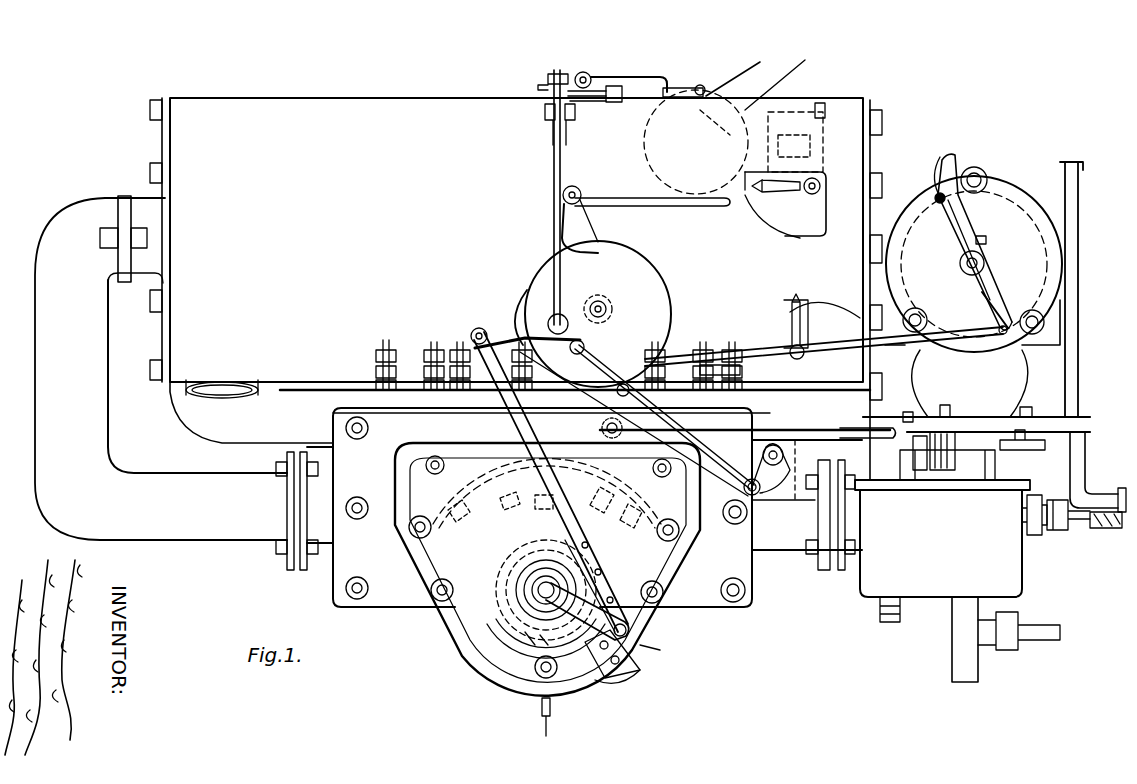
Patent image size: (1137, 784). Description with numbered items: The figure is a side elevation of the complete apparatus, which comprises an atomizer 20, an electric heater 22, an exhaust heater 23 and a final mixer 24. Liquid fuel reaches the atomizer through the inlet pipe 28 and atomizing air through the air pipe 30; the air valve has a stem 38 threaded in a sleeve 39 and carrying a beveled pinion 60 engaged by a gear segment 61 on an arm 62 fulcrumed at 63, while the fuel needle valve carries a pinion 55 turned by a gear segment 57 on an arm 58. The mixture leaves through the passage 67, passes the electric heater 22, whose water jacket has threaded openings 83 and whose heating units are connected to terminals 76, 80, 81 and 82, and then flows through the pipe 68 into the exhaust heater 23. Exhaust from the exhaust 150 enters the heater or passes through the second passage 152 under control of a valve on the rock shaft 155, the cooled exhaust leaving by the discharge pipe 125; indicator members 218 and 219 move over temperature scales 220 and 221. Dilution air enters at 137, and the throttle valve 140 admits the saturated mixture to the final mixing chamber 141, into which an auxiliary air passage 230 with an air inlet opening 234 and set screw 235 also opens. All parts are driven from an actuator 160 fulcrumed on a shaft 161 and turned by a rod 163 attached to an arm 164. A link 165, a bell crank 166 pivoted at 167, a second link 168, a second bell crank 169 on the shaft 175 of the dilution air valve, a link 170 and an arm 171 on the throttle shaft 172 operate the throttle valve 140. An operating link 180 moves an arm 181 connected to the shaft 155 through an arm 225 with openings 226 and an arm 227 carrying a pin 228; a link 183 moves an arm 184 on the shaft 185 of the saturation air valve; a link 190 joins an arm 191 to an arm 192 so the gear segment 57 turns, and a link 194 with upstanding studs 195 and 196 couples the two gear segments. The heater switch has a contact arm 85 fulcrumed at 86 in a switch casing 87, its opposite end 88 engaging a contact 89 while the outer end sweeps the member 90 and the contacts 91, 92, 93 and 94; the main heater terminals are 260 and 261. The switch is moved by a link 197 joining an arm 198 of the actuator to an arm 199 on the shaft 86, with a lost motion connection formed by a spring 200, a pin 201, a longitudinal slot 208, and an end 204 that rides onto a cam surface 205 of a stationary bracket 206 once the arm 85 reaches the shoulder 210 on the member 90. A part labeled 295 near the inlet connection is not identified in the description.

The atomizer 20 is at (1020, 575).
The electric heater 22 is at (760, 552).
The exhaust heater 23 is at (318, 100).
The final mixer 24 is at (745, 110).
The inlet pipe 28 is at (880, 605).
The air pipe 30 is at (962, 632).
The stem 38 is at (1068, 530).
The sleeve 39 is at (1036, 535).
The pinion 55 is at (968, 482).
The gear segment 57 is at (932, 468).
The arm 58 is at (898, 455).
The beveled pinion 60 is at (1112, 530).
The gear segment 61 is at (1113, 478).
The arm 62 is at (1088, 445).
The fulcrum 63 is at (1040, 446).
The passage 67 is at (770, 552).
The passage 68 is at (90, 510).
The terminal 76 is at (784, 188).
The terminal 80 is at (520, 335).
The terminal 81 is at (472, 345).
The terminal 82 is at (383, 350).
The threaded openings 83 is at (334, 420).
The contact arm 85 is at (547, 494).
The shaft 86 is at (538, 582).
The switch casing 87 is at (482, 618).
The opposite end 88 is at (515, 625).
The contact 89 is at (545, 642).
The member 90 is at (640, 498).
The contact 91 is at (615, 438).
The contact 92 is at (537, 512).
The contact 93 is at (514, 497).
The contact 94 is at (472, 516).
The discharge pipe 125 is at (240, 458).
The air entry 137 is at (225, 398).
The throttle valve 140 is at (730, 100).
The final mixing chamber 141 is at (794, 70).
The exhaust 150 is at (1079, 215).
The second passage 152 is at (1000, 363).
The rock shaft 155 is at (984, 260).
The actuator 160 is at (660, 248).
The shaft 161 is at (610, 308).
The rod 163 is at (660, 205).
The arm 164 is at (583, 215).
The link 165 is at (553, 162).
The bell crank 166 is at (547, 84).
The fulcrum 167 is at (571, 135).
The second link 168 is at (585, 72).
The second bell crank 169 is at (600, 102).
The link 170 is at (648, 72).
The arm 171 is at (708, 84).
The shaft 172 is at (744, 67).
The shaft 175 is at (622, 100).
The operating link 180 is at (718, 352).
The arm 181 is at (990, 295).
The link 183 is at (735, 432).
The arm 184 is at (760, 488).
The shaft 185 is at (796, 438).
The link 190 is at (885, 400).
The arm 191 is at (618, 393).
The arm 192 is at (870, 414).
The link 194 is at (1015, 408).
The upstanding stud 195 is at (945, 408).
The upstanding stud 196 is at (1045, 420).
The link 197 is at (462, 328).
The arm 198 is at (530, 288).
The arm 199 is at (535, 645).
The spring 200 is at (630, 642).
The pin 201 is at (628, 630).
The end 204 is at (660, 652).
The cam surface 205 is at (632, 672).
The stationary bracket 206 is at (618, 688).
The longitudinal slot 208 is at (604, 586).
The shoulder 210 is at (690, 492).
The indicator member 218 is at (760, 215).
The indicator member 219 is at (805, 308).
The temperature scale 220 is at (790, 232).
The temperature scale 221 is at (812, 320).
The arm 225 is at (978, 232).
The openings 226 is at (968, 170).
The arm 227 is at (950, 227).
The pin 228 is at (936, 190).
The auxiliary air passage 230 is at (815, 110).
The air inlet opening 234 is at (800, 148).
The set screw 235 is at (822, 106).
The main heater terminal 260 is at (775, 388).
The main heater terminal 261 is at (552, 705).
The flange 295 is at (817, 520).